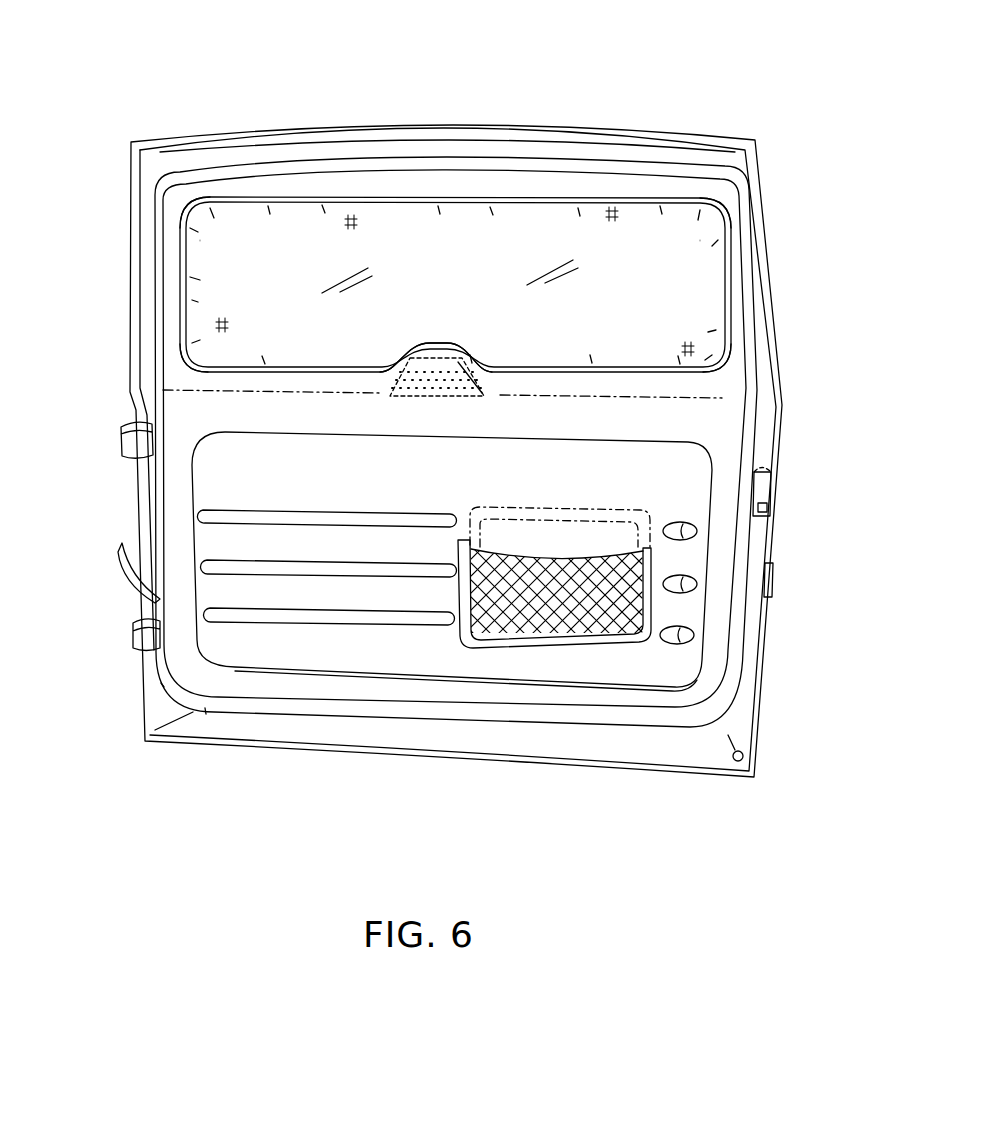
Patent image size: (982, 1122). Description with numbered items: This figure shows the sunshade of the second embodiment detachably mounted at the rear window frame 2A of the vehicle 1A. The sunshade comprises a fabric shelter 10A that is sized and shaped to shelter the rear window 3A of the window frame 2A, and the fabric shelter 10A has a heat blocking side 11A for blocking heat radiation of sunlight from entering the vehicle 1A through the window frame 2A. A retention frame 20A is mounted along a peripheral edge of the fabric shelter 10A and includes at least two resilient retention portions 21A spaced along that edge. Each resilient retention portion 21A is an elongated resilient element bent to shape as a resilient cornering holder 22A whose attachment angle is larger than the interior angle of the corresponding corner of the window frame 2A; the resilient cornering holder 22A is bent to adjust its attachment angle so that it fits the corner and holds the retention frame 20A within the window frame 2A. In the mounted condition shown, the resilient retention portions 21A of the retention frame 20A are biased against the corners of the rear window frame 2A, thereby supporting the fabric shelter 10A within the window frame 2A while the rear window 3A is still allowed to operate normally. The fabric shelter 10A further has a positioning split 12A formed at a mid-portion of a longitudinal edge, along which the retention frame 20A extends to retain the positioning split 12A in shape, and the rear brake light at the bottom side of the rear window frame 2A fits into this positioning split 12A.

The vehicle 1A is at (113, 267).
The window frame 2A is at (250, 140).
The window 3A is at (689, 178).
The fabric shelter 10A is at (329, 245).
The heat blocking side 11A is at (650, 300).
The positioning split 12A is at (403, 367).
The retention frame 20A is at (577, 198).
The resilient retention portions 21A is at (459, 214).
The resilient cornering holder 22A is at (181, 204).